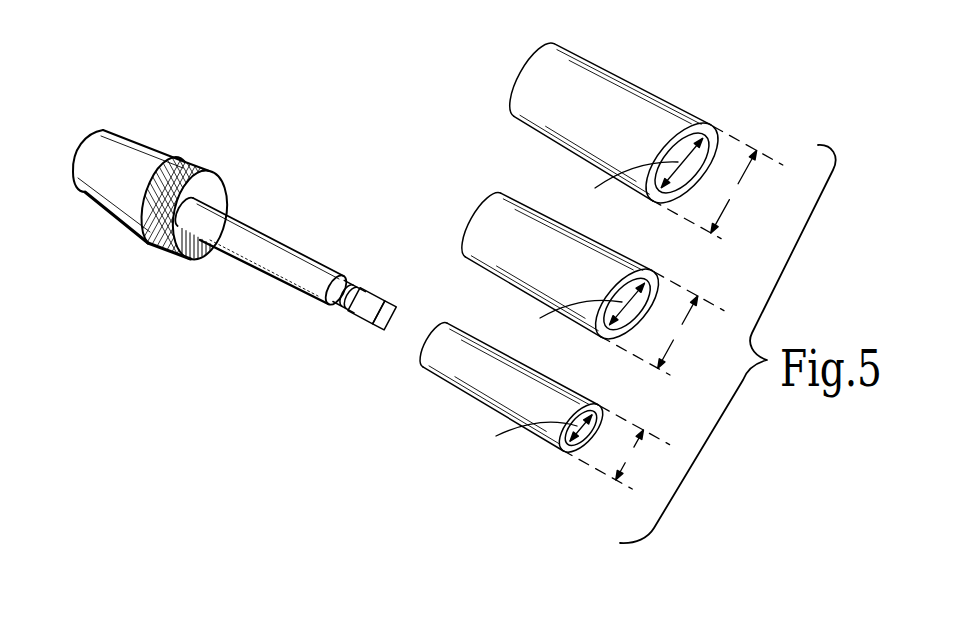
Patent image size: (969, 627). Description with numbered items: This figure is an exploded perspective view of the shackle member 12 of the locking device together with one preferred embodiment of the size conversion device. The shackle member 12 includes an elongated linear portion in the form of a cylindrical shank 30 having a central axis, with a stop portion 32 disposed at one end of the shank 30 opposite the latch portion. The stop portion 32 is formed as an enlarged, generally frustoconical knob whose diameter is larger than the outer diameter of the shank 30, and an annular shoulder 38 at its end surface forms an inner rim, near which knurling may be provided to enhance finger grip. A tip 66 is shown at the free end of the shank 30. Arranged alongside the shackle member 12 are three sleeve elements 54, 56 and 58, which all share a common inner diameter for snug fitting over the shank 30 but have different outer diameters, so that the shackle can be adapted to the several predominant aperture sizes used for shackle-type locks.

The shackle member 12 is at (253, 255).
The stop portion 32 is at (128, 177).
The annular shoulder 38 is at (218, 192).
The shank 30 is at (247, 232).
The tip 66 is at (338, 277).
The sleeve element 54 is at (458, 365).
The sleeve element 56 is at (492, 218).
The sleeve element 58 is at (570, 85).